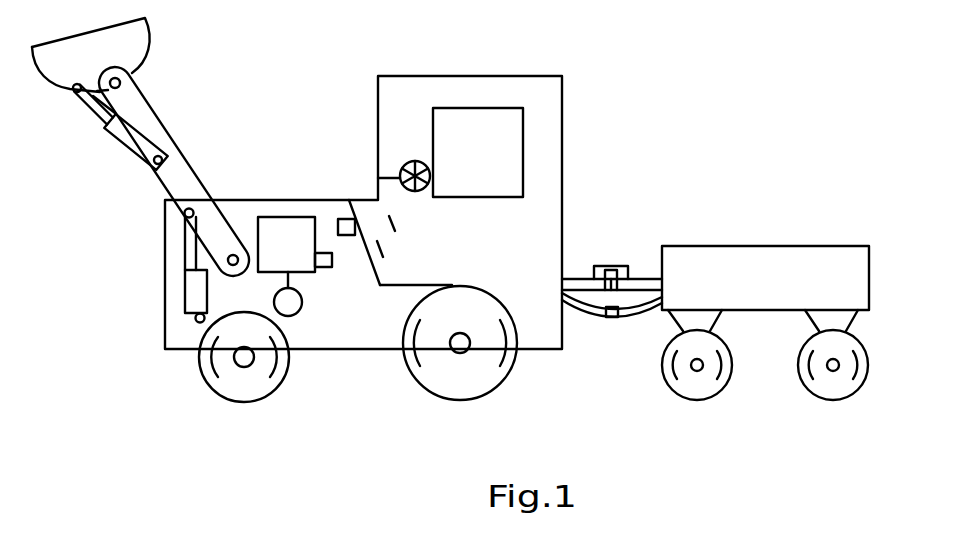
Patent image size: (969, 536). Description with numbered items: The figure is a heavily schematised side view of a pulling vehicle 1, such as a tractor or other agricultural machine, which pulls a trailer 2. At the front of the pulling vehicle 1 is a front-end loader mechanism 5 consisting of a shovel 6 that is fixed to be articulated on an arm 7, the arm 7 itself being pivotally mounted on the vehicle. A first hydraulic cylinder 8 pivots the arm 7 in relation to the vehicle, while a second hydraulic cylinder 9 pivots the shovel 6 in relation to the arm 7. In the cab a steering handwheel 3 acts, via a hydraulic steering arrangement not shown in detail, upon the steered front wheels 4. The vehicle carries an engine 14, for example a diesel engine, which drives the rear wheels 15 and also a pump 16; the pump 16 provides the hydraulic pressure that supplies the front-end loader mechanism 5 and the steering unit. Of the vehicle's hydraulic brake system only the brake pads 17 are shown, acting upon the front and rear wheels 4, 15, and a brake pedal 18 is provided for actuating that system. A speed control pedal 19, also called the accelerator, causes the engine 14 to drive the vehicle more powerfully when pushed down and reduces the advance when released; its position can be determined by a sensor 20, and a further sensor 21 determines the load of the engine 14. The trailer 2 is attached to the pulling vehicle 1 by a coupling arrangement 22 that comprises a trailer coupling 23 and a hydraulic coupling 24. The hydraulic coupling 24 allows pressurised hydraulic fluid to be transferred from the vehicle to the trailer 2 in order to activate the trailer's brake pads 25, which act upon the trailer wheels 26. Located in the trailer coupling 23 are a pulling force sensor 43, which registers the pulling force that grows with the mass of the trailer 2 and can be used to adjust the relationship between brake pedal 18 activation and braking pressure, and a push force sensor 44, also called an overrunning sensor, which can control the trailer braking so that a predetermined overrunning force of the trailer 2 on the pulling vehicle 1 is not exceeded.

The pulling vehicle 1 is at (403, 87).
The trailer 2 is at (754, 337).
The steering handwheel 3 is at (402, 160).
The front wheels 4 is at (228, 386).
The front-end loader mechanism 5 is at (140, 185).
The shovel 6 is at (143, 44).
The arm 7 is at (183, 180).
The first hydraulic cylinder 8 is at (192, 297).
The second hydraulic cylinder 9 is at (134, 135).
The engine 14 is at (275, 223).
The rear wheels 15 is at (482, 384).
The pump 16 is at (297, 303).
The brake pads 17 is at (204, 378).
The brake pedal 18 is at (372, 257).
The speed control pedal 19 is at (363, 232).
The sensor 20 is at (343, 219).
The further sensor 21 is at (332, 260).
The coupling arrangement 22 is at (644, 279).
The trailer coupling 23 is at (612, 281).
The hydraulic coupling 24 is at (611, 318).
The brake pads 25 is at (676, 377).
The trailer wheels 26 is at (695, 389).
The pulling force sensor 43 is at (598, 266).
The push force sensor 44 is at (630, 278).